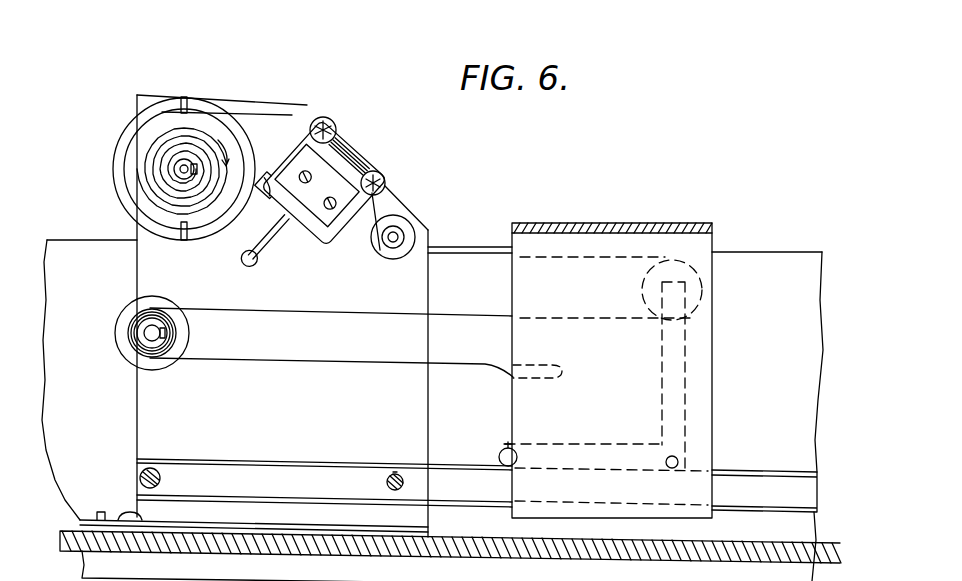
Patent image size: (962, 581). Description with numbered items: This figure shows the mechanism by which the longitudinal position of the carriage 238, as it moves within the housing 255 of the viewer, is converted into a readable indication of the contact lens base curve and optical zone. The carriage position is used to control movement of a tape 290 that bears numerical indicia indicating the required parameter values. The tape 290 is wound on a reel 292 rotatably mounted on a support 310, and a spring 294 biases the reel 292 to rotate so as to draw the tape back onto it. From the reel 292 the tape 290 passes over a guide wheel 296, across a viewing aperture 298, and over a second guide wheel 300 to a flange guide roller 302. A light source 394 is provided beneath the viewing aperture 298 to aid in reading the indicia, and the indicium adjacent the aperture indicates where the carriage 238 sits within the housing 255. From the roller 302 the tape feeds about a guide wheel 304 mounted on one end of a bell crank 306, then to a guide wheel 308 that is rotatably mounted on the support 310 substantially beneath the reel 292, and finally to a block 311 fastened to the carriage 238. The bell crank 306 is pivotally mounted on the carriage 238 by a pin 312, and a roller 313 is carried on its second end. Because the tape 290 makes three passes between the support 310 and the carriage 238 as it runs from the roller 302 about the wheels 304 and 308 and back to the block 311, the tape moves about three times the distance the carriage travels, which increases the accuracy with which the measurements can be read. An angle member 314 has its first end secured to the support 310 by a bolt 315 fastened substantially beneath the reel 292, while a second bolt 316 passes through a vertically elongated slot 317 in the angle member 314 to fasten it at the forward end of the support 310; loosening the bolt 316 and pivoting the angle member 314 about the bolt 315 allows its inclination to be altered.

The reel 292 is at (160, 105).
The spring 294 is at (200, 145).
The tape 290 is at (293, 112).
The guide wheel 296 is at (335, 120).
The light source 394 is at (343, 162).
The viewing aperture 298 is at (372, 167).
The guide wheel 300 is at (387, 185).
The flange guide roller 302 is at (387, 247).
The support 310 is at (150, 263).
The guide wheel 308 is at (165, 332).
The block 311 is at (538, 367).
The guide wheel 304 is at (642, 295).
The bell crank 306 is at (673, 380).
The carriage 238 is at (698, 338).
The housing 255 is at (755, 255).
The angle member 314 is at (268, 478).
The bolt 315 is at (140, 478).
The bolt 316 is at (387, 482).
The vertically elongated slot 317 is at (396, 472).
The roller 313 is at (499, 456).
The pin 312 is at (679, 463).